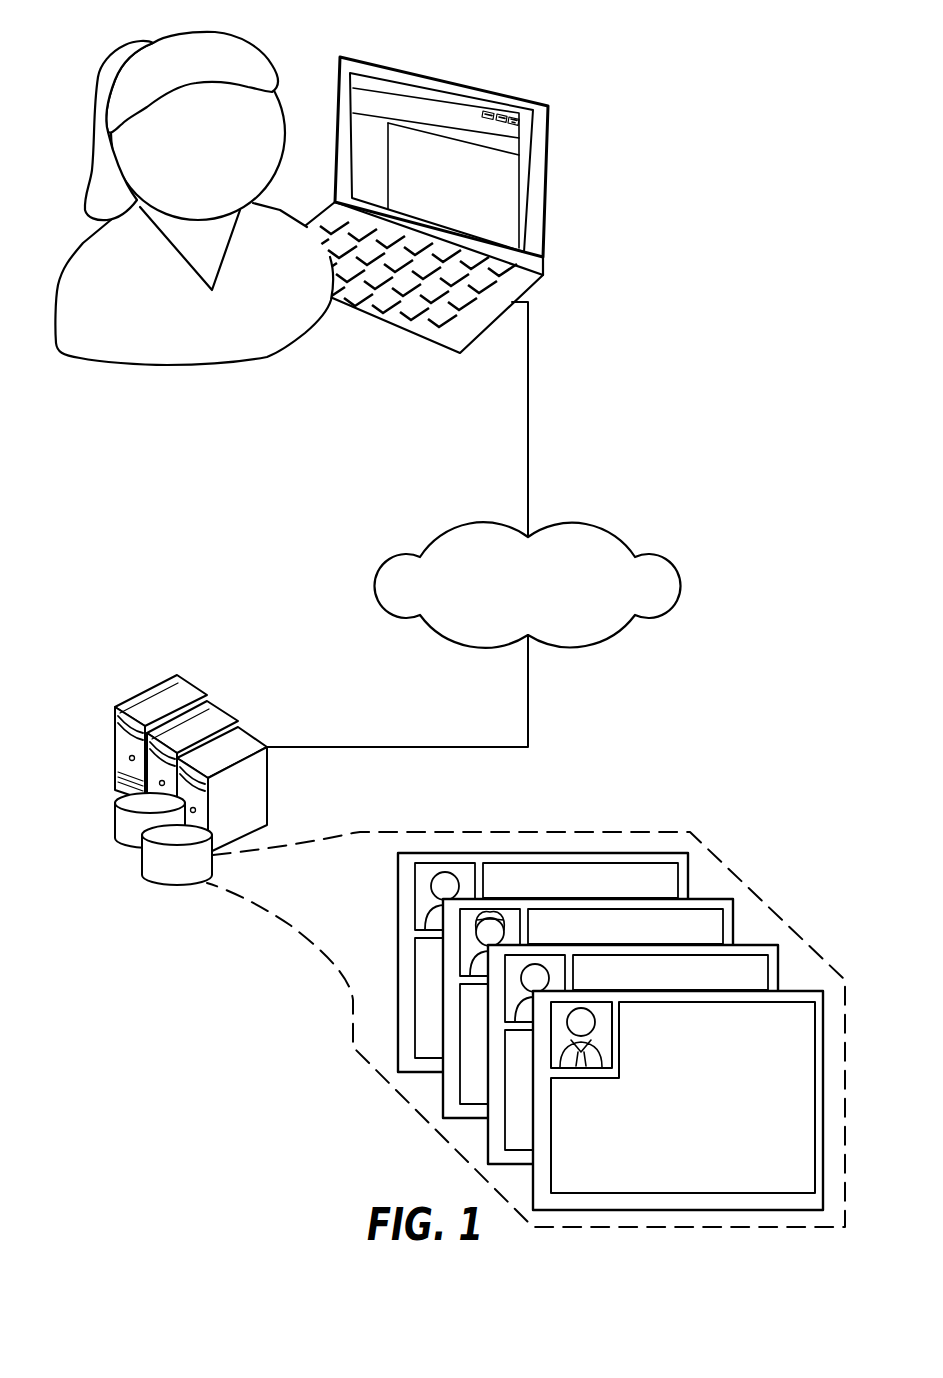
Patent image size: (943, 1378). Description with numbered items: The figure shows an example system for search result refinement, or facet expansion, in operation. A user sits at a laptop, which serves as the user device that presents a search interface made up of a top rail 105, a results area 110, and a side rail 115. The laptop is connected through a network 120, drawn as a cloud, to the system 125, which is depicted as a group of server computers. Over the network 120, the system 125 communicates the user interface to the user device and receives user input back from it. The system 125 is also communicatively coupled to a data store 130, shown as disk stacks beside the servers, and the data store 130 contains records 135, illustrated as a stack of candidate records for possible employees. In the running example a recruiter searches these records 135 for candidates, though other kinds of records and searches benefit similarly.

The top rail 105 is at (331, 278).
The results area 110 is at (515, 139).
The side rail 115 is at (360, 156).
The network 120 is at (593, 528).
The system 125 is at (177, 676).
The data store 130 is at (142, 875).
The records 135 is at (398, 892).